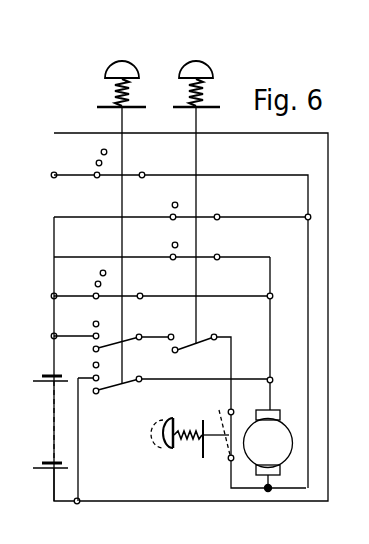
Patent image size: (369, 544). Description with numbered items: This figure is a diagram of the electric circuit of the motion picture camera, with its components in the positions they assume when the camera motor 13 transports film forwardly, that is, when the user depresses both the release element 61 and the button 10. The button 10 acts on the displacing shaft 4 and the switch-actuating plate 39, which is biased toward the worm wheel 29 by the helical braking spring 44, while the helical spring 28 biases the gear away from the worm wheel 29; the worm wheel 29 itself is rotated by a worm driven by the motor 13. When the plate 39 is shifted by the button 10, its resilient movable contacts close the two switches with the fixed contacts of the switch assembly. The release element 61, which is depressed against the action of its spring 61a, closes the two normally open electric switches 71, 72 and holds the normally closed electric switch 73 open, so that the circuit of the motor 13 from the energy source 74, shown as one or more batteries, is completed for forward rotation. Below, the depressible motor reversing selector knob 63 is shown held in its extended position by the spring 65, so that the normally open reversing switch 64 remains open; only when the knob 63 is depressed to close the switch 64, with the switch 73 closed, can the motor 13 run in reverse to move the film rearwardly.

The displacing shaft 4 is at (101, 78).
The button 10 is at (101, 78).
The switch-actuating plate 39 is at (101, 78).
The helical spring 28 is at (81, 92).
The helical braking spring 44 is at (112, 93).
The worm wheel 29 is at (143, 108).
The release element 61 is at (228, 64).
The spring 61a is at (205, 102).
The normally open electric switch 71 is at (203, 217).
The normally open electric switch 72 is at (203, 257).
The normally closed electric switch 73 is at (200, 343).
The energy source 74 is at (51, 461).
The motor reversing selector knob 63 is at (170, 418).
The reversing switch 64 is at (229, 412).
The spring 65 is at (187, 447).
The camera motor 13 is at (255, 452).